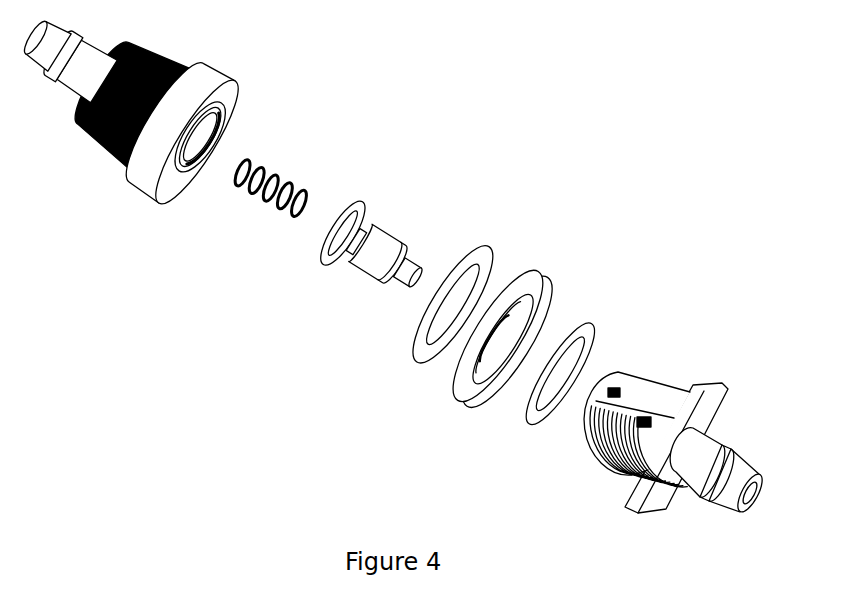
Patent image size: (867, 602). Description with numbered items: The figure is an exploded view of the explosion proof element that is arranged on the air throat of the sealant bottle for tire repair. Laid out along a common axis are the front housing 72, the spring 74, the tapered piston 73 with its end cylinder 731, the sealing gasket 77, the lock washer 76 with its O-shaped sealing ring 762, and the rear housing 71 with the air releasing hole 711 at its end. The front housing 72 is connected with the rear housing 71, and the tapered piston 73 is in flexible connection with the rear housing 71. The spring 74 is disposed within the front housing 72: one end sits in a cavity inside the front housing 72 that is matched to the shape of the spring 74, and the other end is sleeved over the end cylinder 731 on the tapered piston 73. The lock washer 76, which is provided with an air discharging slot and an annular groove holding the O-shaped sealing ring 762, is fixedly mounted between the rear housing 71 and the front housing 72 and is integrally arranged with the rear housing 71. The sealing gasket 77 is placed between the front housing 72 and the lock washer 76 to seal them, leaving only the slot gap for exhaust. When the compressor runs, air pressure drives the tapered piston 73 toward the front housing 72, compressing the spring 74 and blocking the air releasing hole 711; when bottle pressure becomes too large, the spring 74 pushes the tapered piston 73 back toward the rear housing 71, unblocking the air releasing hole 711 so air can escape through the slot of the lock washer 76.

The rear housing 71 is at (697, 483).
The air releasing hole 711 is at (640, 375).
The front housing 72 is at (140, 170).
The tapered piston 73 is at (373, 277).
The end cylinder 731 is at (353, 257).
The spring 74 is at (260, 200).
The lock washer 76 is at (458, 388).
The O-shaped sealing ring 762 is at (577, 335).
The sealing gasket 77 is at (485, 257).